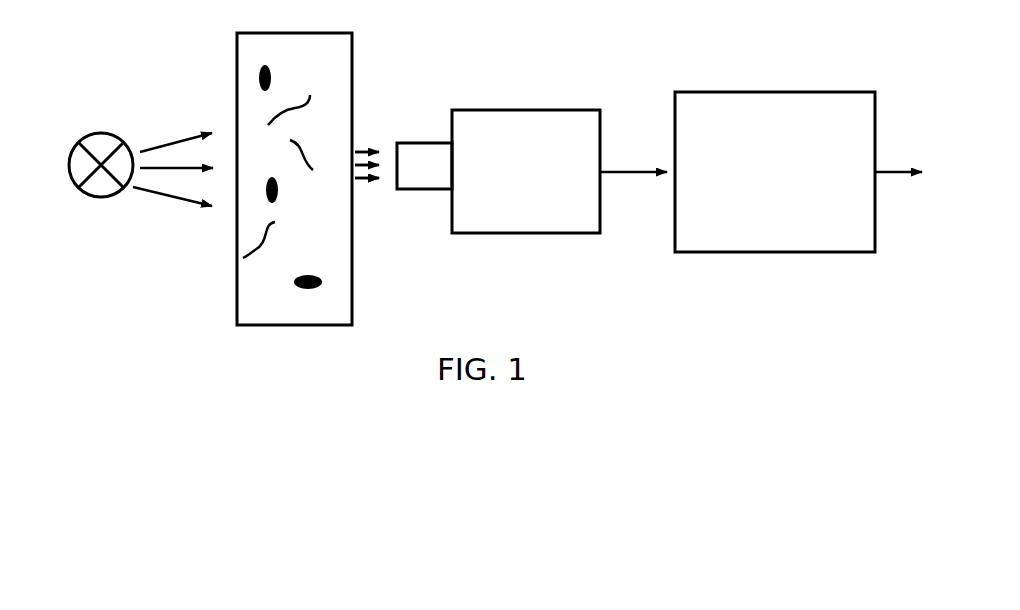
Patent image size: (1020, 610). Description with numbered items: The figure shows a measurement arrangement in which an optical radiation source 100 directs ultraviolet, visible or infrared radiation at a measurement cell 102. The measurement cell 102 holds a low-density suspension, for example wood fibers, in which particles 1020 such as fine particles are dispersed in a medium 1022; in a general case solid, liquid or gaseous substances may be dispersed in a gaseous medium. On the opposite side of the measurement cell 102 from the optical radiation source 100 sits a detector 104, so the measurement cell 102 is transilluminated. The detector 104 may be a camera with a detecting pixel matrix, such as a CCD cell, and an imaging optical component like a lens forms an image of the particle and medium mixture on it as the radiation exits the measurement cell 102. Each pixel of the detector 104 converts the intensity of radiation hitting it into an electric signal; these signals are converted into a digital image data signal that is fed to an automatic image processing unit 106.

The optical radiation source 100 is at (108, 133).
The measurement cell 102 is at (277, 33).
The medium 1022 is at (340, 78).
The particles 1020 is at (297, 282).
The detector 104 is at (505, 110).
The automatic image processing unit 106 is at (755, 92).